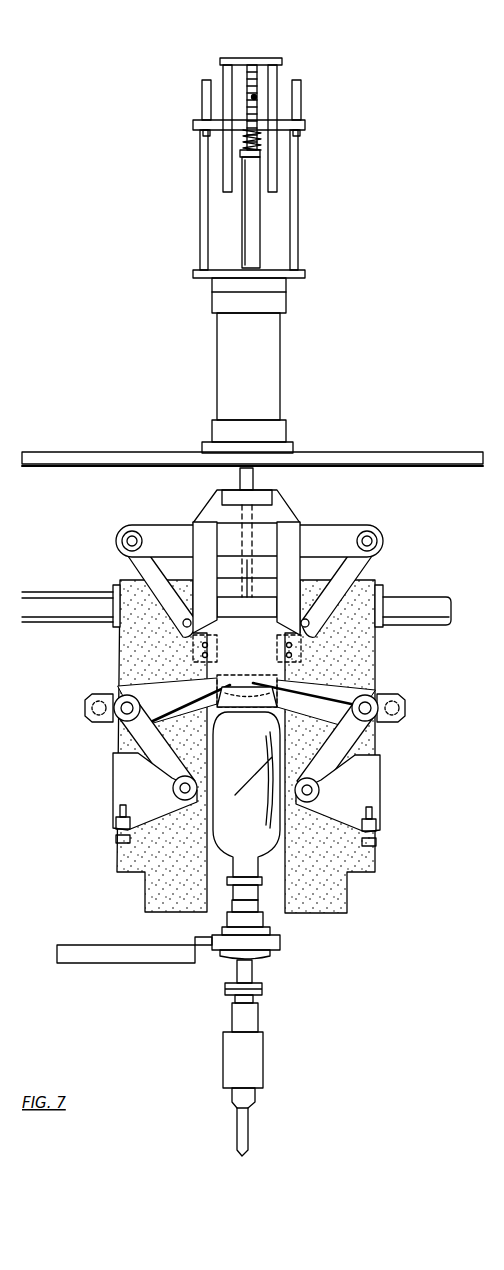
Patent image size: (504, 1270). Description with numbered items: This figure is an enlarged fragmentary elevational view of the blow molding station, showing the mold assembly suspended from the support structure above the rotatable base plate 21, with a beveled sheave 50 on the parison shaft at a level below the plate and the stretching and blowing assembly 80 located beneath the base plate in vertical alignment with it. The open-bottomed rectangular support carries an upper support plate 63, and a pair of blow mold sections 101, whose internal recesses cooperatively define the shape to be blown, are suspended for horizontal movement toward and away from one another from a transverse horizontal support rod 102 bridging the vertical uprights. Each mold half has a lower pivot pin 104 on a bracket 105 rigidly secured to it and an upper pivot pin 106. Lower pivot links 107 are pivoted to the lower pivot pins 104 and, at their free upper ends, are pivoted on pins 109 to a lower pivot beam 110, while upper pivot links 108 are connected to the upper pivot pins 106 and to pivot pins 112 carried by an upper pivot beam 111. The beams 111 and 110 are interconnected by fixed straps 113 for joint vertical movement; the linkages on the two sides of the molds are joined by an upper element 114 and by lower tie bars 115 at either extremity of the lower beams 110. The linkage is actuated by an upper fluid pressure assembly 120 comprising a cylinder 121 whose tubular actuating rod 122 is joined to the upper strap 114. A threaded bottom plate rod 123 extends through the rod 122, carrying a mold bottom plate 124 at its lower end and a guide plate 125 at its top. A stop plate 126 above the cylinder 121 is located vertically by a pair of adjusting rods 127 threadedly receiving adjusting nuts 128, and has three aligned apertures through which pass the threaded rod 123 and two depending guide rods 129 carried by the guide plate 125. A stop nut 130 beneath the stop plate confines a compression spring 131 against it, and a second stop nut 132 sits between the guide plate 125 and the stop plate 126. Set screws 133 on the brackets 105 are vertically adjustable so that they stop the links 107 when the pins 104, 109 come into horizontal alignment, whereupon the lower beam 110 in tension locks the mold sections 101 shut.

The base plate 21 is at (92, 948).
The beveled sheave 50 is at (262, 990).
The upper support plate 63 is at (49, 455).
The stretching and blowing assembly 80 is at (268, 1066).
The blow mold sections 101 is at (132, 590).
The horizontal support rod 102 is at (451, 607).
The lower pivot pin 104 is at (174, 790).
The bracket 105 is at (113, 800).
The upper pivot pin 106 is at (183, 626).
The lower pivot links 107 is at (142, 740).
The upper pivot links 108 is at (142, 563).
The pins 109 is at (104, 697).
The lower pivot beam 110 is at (132, 671).
The upper pivot beam 111 is at (283, 508).
The pivot pins 112 is at (128, 538).
The fixed straps 113 is at (204, 525).
The upper element 114 is at (230, 497).
The lower tie bars 115 is at (86, 711).
The upper fluid pressure assembly 120 is at (308, 352).
The cylinder 121 is at (217, 358).
The actuating rod 122 is at (257, 225).
The threaded bottom plate rod 123 is at (254, 72).
The mold bottom plate 124 is at (226, 690).
The guide plate 125 is at (247, 58).
The stop plate 126 is at (305, 125).
The adjusting rods 127 is at (200, 210).
The adjusting nuts 128 is at (202, 132).
The rod 129 is at (225, 72).
The stop nut 130 is at (258, 155).
The compression spring 131 is at (256, 141).
The second stop nut 132 is at (251, 97).
The set screws 133 is at (118, 842).